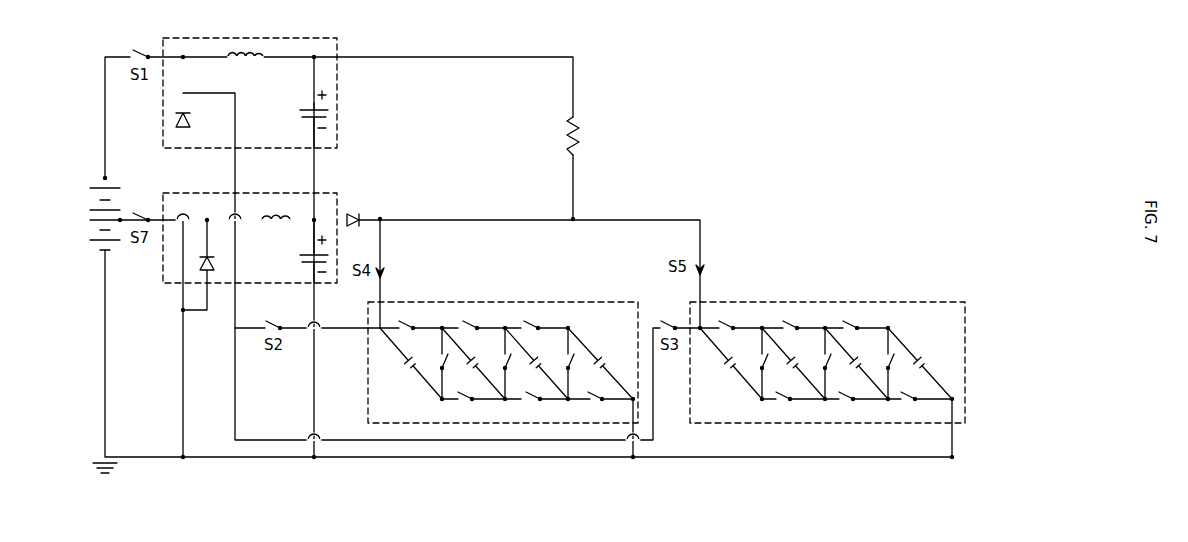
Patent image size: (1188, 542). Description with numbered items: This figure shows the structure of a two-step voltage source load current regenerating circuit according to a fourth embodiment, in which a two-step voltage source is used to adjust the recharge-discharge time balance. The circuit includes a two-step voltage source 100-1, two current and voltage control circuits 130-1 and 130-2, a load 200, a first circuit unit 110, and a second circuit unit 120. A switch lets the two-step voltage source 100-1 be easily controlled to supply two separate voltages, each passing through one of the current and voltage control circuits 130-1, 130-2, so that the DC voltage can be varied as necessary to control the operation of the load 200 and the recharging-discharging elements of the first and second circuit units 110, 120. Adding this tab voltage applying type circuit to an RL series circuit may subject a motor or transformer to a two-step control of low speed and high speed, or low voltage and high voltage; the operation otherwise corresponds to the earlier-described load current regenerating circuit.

The two-step voltage source 100-1 is at (103, 178).
The first circuit unit 110 is at (530, 302).
The second circuit unit 120 is at (822, 302).
The first current and voltage control circuit 130-1 is at (340, 113).
The second current and voltage control circuit 130-2 is at (337, 207).
The load 200 is at (580, 121).